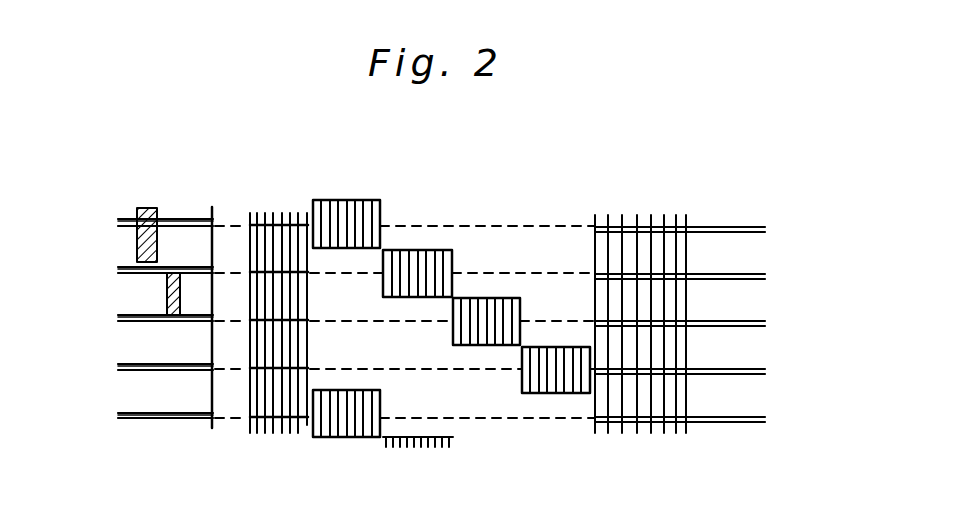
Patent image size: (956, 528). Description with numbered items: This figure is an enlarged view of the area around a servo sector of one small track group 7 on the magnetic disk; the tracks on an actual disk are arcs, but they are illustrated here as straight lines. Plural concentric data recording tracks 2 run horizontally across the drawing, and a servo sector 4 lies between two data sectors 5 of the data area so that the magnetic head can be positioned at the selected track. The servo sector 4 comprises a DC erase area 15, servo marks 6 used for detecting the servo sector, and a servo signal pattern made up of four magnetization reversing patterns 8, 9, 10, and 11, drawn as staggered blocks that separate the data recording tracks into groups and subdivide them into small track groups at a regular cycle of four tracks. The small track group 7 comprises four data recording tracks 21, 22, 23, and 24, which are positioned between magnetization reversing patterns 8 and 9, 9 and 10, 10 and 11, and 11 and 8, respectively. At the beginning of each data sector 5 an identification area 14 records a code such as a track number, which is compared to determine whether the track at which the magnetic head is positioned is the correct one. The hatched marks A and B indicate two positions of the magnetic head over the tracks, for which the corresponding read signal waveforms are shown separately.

The data recording tracks 2 is at (725, 295).
The servo sectors 4 is at (218, 170).
The data sectors 5 is at (212, 167).
The servo marks 6 is at (277, 212).
The small track group 7 is at (94, 220).
The magnetization reversing pattern 8 is at (328, 390).
The magnetization reversing pattern 9 is at (413, 297).
The magnetization reversing pattern 10 is at (490, 345).
The magnetization reversing pattern 11 is at (552, 393).
The identification area 14 is at (647, 357).
The DC erase area 15 is at (232, 425).
The data recording track 21 is at (753, 253).
The data recording track 22 is at (753, 302).
The data recording track 23 is at (753, 350).
The data recording track 24 is at (753, 398).
The magnetic head position A is at (138, 210).
The magnetic head position B is at (177, 317).